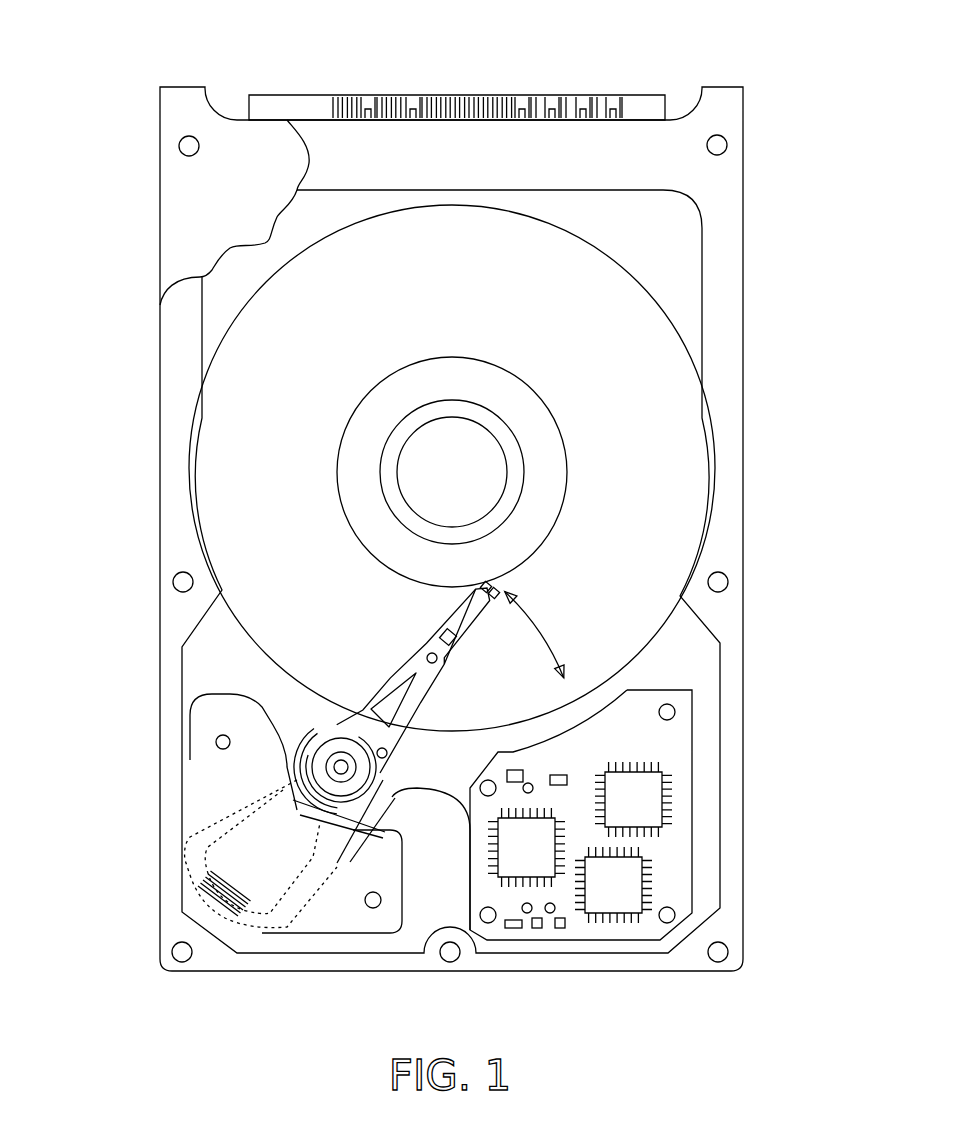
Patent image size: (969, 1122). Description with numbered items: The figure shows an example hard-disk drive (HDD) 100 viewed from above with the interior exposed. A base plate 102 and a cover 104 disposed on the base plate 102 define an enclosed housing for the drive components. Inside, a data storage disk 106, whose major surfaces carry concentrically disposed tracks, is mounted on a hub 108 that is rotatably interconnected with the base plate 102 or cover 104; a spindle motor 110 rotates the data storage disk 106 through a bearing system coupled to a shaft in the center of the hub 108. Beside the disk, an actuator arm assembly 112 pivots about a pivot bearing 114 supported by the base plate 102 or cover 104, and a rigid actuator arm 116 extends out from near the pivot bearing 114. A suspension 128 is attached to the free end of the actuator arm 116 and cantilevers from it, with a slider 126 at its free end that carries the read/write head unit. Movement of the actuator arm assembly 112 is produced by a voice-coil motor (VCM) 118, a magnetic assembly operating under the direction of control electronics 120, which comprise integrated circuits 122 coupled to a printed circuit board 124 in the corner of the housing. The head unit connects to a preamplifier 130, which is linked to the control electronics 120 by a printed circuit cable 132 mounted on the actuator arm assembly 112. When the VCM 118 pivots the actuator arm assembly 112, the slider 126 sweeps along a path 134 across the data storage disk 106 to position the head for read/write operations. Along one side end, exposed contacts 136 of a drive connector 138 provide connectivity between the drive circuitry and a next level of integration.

The hard-disk drive 100 is at (490, 46).
The base plate 102 is at (177, 527).
The cover 104 is at (222, 204).
The data storage disk 106 is at (633, 338).
The hub 108 is at (520, 425).
The spindle motor 110 is at (482, 477).
The actuator arm assembly 112 is at (358, 722).
The pivot bearing 114 is at (323, 757).
The actuator arm 116 is at (350, 715).
The voice-coil motor 118 is at (303, 903).
The control electronics 120 is at (478, 983).
The integrated circuits 122 is at (635, 803).
The printed circuit board 124 is at (665, 870).
The slider 126 is at (493, 585).
The suspension 128 is at (455, 622).
The preamplifier 130 is at (387, 788).
The printed circuit cable 132 is at (395, 798).
The path 134 is at (543, 617).
The exposed contacts 136 is at (630, 112).
The drive connector 138 is at (302, 112).